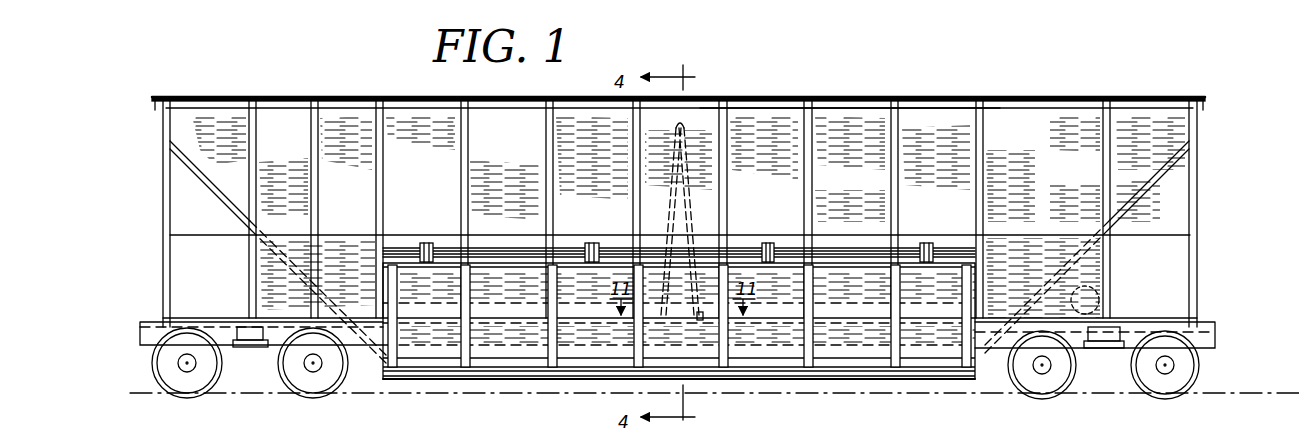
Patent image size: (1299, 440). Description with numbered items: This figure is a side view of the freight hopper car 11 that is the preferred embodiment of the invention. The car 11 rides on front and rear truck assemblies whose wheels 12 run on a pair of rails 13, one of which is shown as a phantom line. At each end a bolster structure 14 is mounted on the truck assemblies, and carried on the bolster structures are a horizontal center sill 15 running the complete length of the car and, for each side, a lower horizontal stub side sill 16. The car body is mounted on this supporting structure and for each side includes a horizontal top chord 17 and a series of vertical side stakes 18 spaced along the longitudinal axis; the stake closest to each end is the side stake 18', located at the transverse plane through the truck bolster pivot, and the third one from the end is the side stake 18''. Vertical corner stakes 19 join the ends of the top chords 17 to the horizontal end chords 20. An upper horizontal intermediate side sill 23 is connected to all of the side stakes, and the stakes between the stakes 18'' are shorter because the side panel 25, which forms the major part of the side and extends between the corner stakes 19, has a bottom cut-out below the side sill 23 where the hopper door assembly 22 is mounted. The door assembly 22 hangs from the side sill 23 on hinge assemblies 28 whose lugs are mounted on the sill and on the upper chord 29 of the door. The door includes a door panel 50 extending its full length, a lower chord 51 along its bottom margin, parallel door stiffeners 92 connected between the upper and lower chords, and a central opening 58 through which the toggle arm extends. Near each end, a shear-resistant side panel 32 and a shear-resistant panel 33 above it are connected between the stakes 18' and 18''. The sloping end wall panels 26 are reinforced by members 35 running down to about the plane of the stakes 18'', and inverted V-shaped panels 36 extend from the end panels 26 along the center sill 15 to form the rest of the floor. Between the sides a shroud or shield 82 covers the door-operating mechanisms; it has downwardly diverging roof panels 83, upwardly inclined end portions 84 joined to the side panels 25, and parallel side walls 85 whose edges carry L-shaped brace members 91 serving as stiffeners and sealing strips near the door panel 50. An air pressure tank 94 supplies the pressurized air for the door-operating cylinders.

The freight hopper car 11 is at (180, 88).
The wheels 12 is at (278, 375).
The rails 13 is at (147, 386).
The bolster structure 14 is at (225, 308).
The center sill 15 is at (1200, 325).
The lower stub side sills 16 is at (190, 310).
The top chord 17 is at (855, 105).
The side stakes 18 is at (604, 192).
The side stake 18' is at (681, 192).
The side stake 18'' is at (703, 192).
The corner stakes 19 is at (162, 242).
The end chords 20 is at (155, 110).
The hopper door assembly 22 is at (553, 380).
The upper intermediate side sill 23 is at (868, 228).
The side panel 25 is at (202, 120).
The sloping end wall panel 26 is at (220, 172).
The hinge assemblies 28 is at (427, 245).
The upper chord 29 is at (530, 265).
The shear-resistant side panel 32 is at (267, 282).
The shear-resistant panel 33 is at (280, 128).
The reinforcing members 35 is at (226, 210).
The inverted V-shaped panels 36 is at (345, 290).
The door panel 50 is at (880, 293).
The lower chord 51 is at (855, 375).
The opening 58 is at (703, 318).
The shroud or shield 82 is at (698, 130).
The roof panels 83 is at (660, 235).
The upwardly inclined end portions 84 is at (660, 190).
The side walls 85 is at (700, 360).
The L-shaped brace members 91 is at (640, 372).
The door stiffeners 92 is at (550, 325).
The air pressure tank 94 is at (1100, 290).